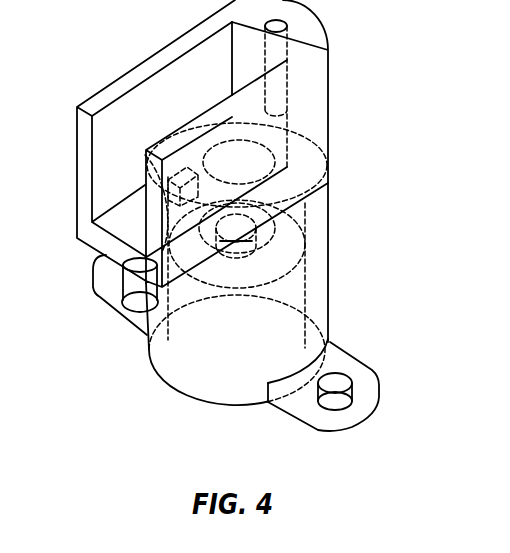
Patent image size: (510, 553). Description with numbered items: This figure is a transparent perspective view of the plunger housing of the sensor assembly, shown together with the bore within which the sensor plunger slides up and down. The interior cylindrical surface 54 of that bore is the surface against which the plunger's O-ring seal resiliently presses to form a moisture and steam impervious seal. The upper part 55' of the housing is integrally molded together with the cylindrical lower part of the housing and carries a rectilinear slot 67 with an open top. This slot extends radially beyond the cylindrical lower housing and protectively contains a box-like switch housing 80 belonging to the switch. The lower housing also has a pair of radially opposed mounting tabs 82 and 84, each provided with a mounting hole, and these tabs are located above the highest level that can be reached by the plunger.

The interior cylindrical surface 54 is at (305, 297).
The upper part of the housing 55' is at (316, 171).
The rectilinear slot 67 is at (140, 98).
The switch housing 80 is at (168, 186).
The mounting tab 82 is at (99, 273).
The mounting tab 84 is at (361, 377).